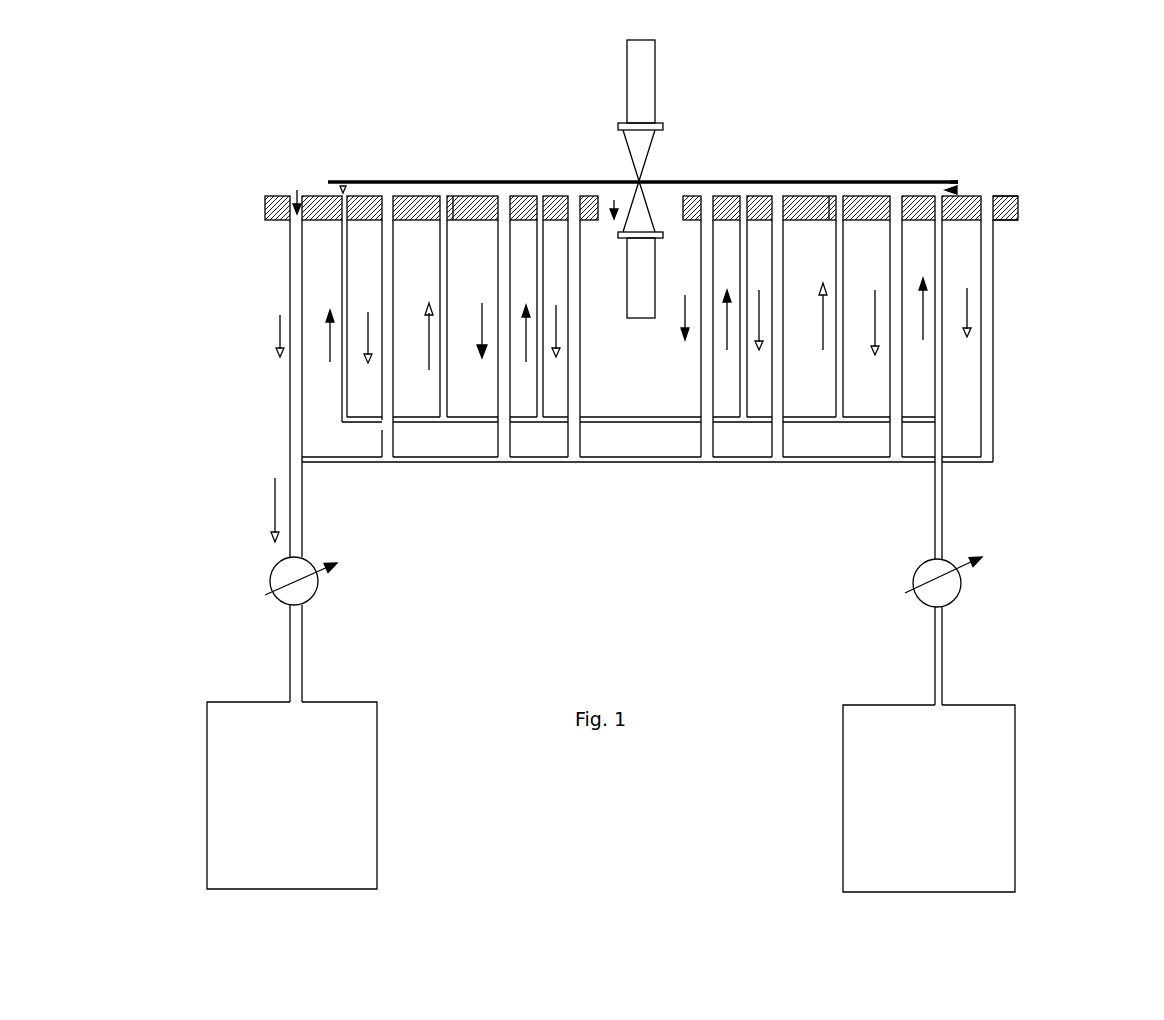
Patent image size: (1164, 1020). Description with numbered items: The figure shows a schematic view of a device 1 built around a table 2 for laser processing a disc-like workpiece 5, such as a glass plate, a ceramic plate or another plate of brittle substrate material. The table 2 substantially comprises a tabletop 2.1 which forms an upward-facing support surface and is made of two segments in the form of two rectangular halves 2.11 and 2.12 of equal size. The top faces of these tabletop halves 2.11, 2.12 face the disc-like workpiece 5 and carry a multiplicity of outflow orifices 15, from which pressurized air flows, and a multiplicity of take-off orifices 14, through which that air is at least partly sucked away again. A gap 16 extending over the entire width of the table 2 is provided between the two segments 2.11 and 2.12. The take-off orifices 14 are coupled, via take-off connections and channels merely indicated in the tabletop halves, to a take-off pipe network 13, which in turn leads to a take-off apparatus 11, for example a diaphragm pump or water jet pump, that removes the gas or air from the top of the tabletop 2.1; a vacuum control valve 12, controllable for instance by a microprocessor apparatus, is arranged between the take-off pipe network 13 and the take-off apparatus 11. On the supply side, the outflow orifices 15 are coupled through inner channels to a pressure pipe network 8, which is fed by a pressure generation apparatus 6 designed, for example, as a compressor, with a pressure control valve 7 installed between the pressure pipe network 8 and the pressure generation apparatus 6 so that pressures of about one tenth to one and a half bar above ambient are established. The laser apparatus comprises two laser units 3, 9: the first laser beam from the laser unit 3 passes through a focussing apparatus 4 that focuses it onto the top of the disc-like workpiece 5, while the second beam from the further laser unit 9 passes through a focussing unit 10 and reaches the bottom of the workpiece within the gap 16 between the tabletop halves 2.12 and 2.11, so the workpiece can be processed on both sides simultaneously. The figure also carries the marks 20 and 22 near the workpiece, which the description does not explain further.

The device 1 is at (294, 146).
The table 2 is at (1017, 205).
The tabletop 2.1 is at (1005, 221).
The tabletop half 2.11 is at (1005, 198).
The tabletop half 2.12 is at (267, 212).
The laser unit 3 is at (648, 70).
The focussing apparatus 4 is at (662, 122).
The disc-like workpiece 5 is at (895, 177).
The pressure generation apparatus 6 is at (982, 712).
The pressure control valve 7 is at (952, 593).
The pressure pipe network 8 is at (940, 383).
The further laser unit 9 is at (635, 313).
The focussing unit 10 is at (620, 238).
The take-off apparatus 11 is at (336, 712).
The vacuum control valve 12 is at (302, 570).
The take-off pipe network 13 is at (290, 384).
The take-off orifices 14 is at (297, 200).
The outflow orifices 15 is at (343, 186).
The gap 16 is at (613, 200).
The substrate end 20 is at (964, 176).
The direction of movement 22 is at (952, 190).